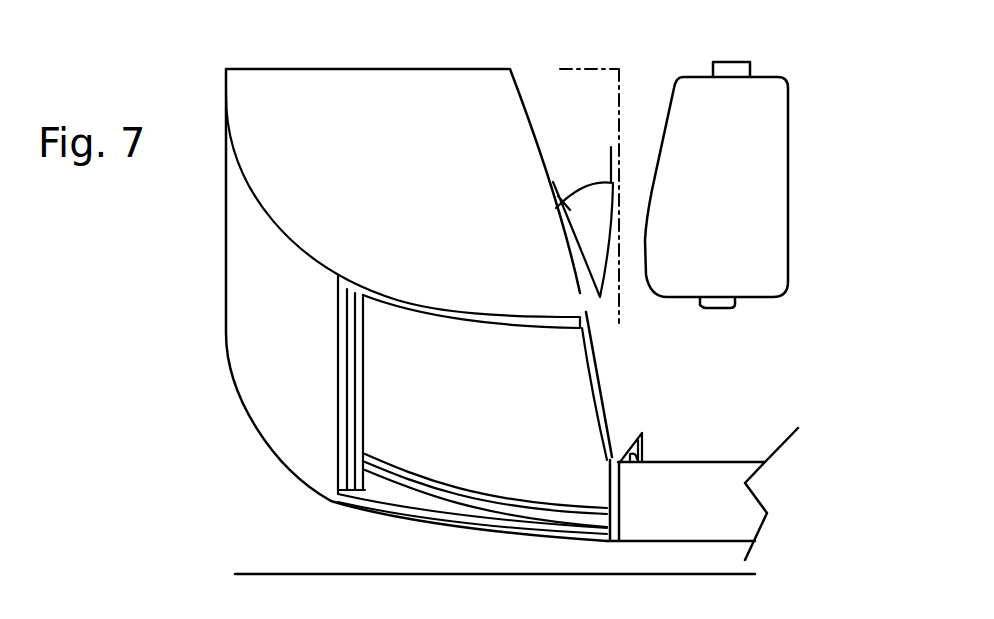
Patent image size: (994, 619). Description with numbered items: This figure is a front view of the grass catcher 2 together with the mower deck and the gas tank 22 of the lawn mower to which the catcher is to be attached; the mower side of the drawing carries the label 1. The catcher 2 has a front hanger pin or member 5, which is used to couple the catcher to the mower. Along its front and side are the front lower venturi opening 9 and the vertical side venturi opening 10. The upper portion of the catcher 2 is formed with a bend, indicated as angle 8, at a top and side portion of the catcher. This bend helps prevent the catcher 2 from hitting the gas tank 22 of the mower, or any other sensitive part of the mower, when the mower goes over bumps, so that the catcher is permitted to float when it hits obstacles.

The vehicle body 1 is at (693, 460).
The grass catcher 2 is at (360, 87).
The front hanger pin 5 is at (620, 420).
The angle 8 is at (587, 175).
The front lower venturi opening 9 is at (405, 494).
The vertical side venturi opening 10 is at (357, 370).
The gas tank 22 is at (770, 178).